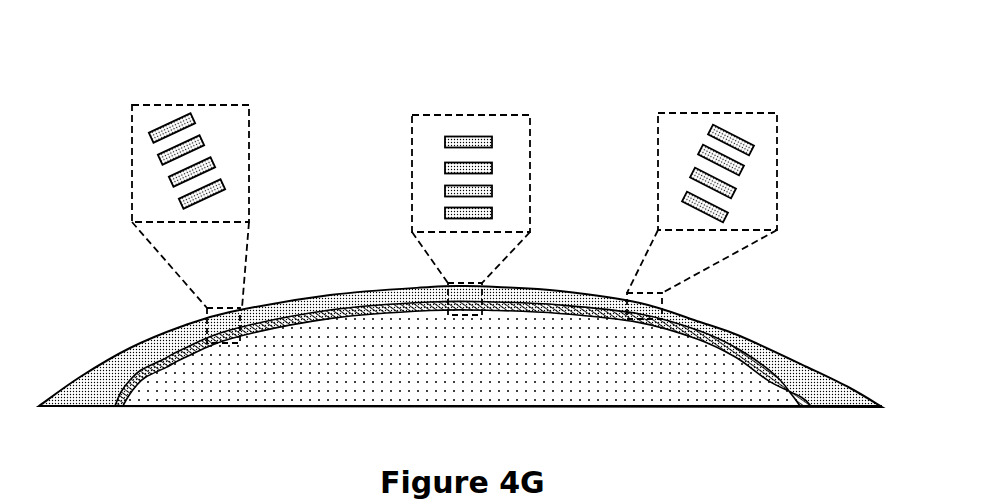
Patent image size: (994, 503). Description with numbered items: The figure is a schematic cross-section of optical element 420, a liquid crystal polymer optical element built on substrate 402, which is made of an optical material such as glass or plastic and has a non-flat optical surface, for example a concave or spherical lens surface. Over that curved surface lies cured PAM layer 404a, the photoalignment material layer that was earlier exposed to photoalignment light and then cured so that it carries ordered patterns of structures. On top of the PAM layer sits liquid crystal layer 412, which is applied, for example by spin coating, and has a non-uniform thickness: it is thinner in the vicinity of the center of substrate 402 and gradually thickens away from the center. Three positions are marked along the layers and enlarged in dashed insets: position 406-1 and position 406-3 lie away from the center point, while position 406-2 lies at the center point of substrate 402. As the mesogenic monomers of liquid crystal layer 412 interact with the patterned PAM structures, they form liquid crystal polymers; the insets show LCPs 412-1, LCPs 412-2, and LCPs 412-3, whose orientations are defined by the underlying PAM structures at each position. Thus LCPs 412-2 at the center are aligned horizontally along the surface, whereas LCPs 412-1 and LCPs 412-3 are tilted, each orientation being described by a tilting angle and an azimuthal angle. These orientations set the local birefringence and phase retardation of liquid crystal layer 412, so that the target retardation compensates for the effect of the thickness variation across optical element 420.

The optical element 420 is at (178, 76).
The substrate 402 is at (478, 384).
The cured PAM layer 404a is at (806, 408).
The liquid crystal layer 412 is at (855, 408).
The first position 406-1 is at (249, 204).
The second position 406-2 is at (530, 205).
The third position 406-3 is at (777, 170).
The first liquid crystal polymers 412-1 is at (200, 142).
The second liquid crystal polymers 412-2 is at (445, 142).
The third liquid crystal polymers 412-3 is at (708, 134).